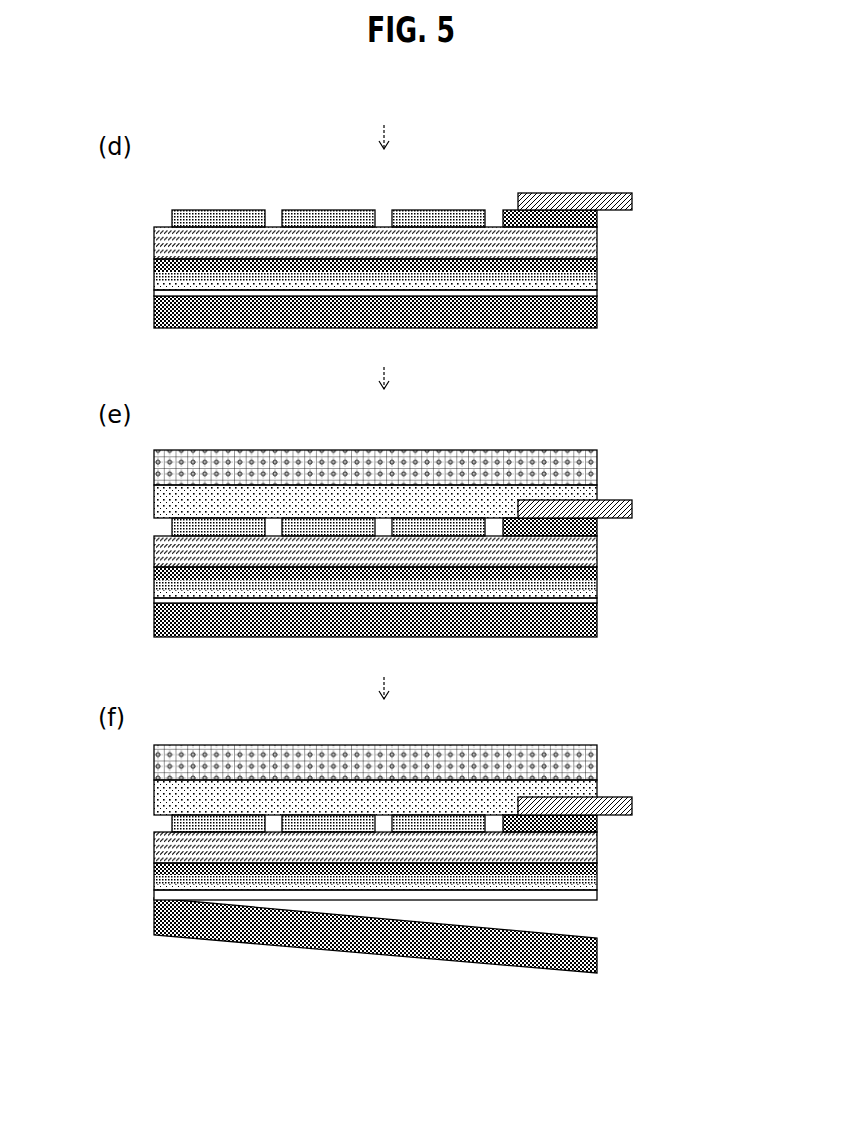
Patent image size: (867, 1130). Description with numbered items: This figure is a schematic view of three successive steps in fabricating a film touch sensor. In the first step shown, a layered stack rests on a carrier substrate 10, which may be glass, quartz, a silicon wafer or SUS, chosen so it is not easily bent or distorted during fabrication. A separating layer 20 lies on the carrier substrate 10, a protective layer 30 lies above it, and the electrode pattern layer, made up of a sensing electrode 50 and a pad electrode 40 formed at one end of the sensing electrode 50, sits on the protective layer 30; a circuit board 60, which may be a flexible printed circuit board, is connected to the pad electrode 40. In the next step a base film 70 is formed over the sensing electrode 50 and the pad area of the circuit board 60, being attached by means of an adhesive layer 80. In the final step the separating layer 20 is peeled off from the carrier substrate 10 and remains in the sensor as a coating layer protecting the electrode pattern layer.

The carrier substrate 10 is at (597, 328).
The separating layer 20 is at (573, 274).
The protective layer 30 is at (580, 246).
The pad electrode 40 is at (597, 221).
The sensing electrode 50 is at (192, 220).
The circuit board 60 is at (632, 203).
The base film 70 is at (572, 468).
The adhesive layer 80 is at (580, 493).